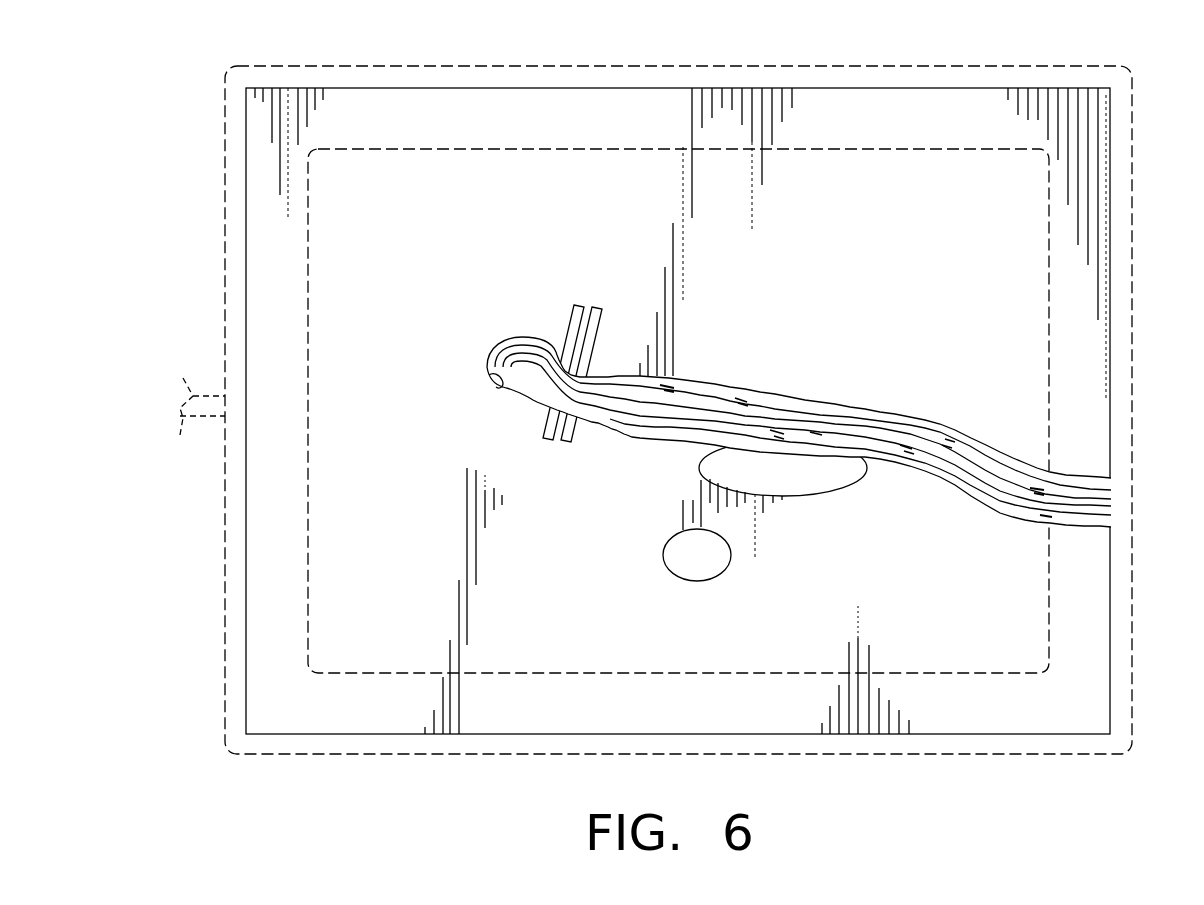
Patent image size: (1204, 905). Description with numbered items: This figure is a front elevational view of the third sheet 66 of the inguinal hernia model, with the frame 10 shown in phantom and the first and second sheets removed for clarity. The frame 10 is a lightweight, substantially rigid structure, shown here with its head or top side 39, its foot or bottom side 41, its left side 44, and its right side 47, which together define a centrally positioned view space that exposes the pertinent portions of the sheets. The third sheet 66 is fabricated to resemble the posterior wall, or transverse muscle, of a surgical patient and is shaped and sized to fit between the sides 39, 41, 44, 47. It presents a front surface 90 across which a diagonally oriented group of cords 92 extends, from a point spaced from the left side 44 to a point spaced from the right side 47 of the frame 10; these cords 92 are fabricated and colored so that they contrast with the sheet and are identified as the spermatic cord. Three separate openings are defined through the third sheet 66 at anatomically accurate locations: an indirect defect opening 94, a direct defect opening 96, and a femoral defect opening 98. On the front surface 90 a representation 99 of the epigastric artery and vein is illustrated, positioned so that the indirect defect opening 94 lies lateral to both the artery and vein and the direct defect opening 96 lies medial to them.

The frame 10 is at (1150, 128).
The head or top side 39 is at (578, 72).
The foot or bottom side 41 is at (860, 752).
The left side 44 is at (1125, 357).
The right side 47 is at (224, 252).
The third sheet 66 is at (398, 611).
The front surface 90 is at (938, 245).
The group of cords 92 is at (752, 382).
The indirect defect opening 94 is at (499, 353).
The direct defect opening 96 is at (760, 494).
The femoral defect opening 98 is at (680, 578).
The representation of the epigastric artery and vein 99 is at (560, 300).